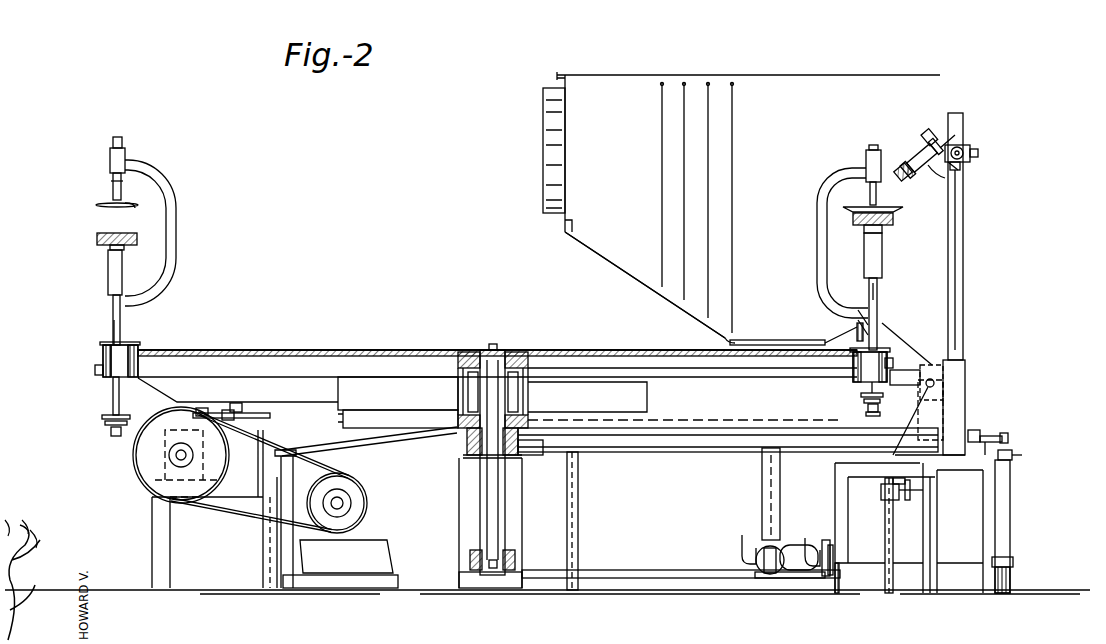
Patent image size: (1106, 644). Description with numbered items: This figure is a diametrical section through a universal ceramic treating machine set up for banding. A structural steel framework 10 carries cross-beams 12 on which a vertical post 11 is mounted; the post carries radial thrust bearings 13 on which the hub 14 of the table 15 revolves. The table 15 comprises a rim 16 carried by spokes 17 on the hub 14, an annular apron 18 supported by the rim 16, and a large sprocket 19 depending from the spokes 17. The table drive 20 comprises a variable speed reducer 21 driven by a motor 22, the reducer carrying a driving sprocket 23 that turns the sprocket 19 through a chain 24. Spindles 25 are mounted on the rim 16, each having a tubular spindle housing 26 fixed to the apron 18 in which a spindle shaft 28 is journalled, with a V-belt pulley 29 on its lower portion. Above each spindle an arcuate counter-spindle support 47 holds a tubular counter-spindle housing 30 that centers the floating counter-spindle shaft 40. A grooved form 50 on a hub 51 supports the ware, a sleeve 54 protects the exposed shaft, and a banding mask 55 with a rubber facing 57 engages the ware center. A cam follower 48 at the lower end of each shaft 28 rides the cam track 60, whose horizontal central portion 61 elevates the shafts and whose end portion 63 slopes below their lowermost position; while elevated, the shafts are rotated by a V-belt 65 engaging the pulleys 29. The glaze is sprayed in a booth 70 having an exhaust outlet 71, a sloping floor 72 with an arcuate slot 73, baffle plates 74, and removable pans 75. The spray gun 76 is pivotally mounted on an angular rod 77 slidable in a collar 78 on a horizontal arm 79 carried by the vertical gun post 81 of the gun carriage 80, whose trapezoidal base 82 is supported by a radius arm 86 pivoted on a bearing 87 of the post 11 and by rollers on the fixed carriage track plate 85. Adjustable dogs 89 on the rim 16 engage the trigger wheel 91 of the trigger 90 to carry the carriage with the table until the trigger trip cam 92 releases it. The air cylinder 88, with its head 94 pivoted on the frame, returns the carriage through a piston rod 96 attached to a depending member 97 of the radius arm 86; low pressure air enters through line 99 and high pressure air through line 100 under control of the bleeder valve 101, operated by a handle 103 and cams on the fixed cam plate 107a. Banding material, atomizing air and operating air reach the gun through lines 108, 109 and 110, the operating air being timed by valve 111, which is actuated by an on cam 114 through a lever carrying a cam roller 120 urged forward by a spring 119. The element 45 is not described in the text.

The framework 10 is at (611, 563).
The vertical post 11 is at (485, 521).
The cross-beams 12 is at (459, 461).
The radial thrust bearings 13 is at (530, 352).
The hub 14 is at (458, 390).
The table 15 is at (393, 350).
The rim 16 is at (103, 351).
The spokes 17 is at (320, 348).
The annular apron 18 is at (185, 352).
The large sprocket 19 is at (362, 412).
The table drive 20 is at (222, 519).
The variable speed reducer 21 is at (245, 470).
The motor 22 is at (350, 506).
The driving sprocket 23 is at (238, 410).
The chain 24 is at (270, 416).
The spindle 25 is at (130, 331).
The tubular spindle housing 26 is at (113, 301).
The spindle shaft 28 is at (113, 397).
The V-belt pulley 29 is at (102, 418).
The tubular counter-spindle housing 30 is at (108, 160).
The floating counter-spindle shaft 40 is at (113, 185).
The lower table 45 is at (950, 466).
The arcuate counter-spindle support 47 is at (168, 246).
The cam follower 48 is at (113, 437).
The form 50 is at (97, 240).
The hub 51 is at (122, 247).
The sleeve 54 is at (110, 268).
The banding mask 55 is at (100, 205).
The facing 57 is at (134, 206).
The cam track 60 is at (660, 431).
The central portion 61 is at (720, 431).
The end portion 63 is at (375, 441).
The V-belt 65 is at (878, 406).
The booth 70 is at (645, 67).
The exhaust outlet 71 is at (543, 109).
The floor 72 is at (642, 295).
The arcuate slot 73 is at (878, 329).
The baffle plates 74 is at (732, 147).
The removable pans 75 is at (748, 340).
The spray gun 76 is at (915, 148).
The angular rod 77 is at (955, 173).
The collar 78 is at (960, 145).
The horizontal arm 79 is at (978, 155).
The gun carriage 80 is at (974, 369).
The vertical gun post 81 is at (963, 257).
The trapezoidal base 82 is at (938, 433).
The fixed carriage track plate 85 is at (1005, 468).
The radius arm 86 is at (602, 453).
The bearing 87 is at (540, 457).
The air cylinder 88 is at (767, 576).
The adjustable dogs 89 is at (95, 369).
The trigger 90 is at (915, 370).
The trigger wheel 91 is at (888, 358).
The trigger trip cam 92 is at (905, 341).
The head 94 is at (825, 578).
The piston rod 96 is at (757, 559).
The depending member 97 is at (762, 499).
The line 99 is at (810, 540).
The high pressure line 100 is at (745, 538).
The carriage return high pressure air bleeder valve 101 is at (928, 477).
The horizontal extending handle 103 is at (908, 500).
The fixed cam plate 107a is at (881, 490).
The line 108 is at (930, 171).
The line 109 is at (905, 166).
The line 110 is at (928, 130).
The valve 111 is at (1022, 456).
The on cam 114 is at (978, 432).
The spring 119 is at (1008, 437).
The cam roller 120 is at (988, 437).